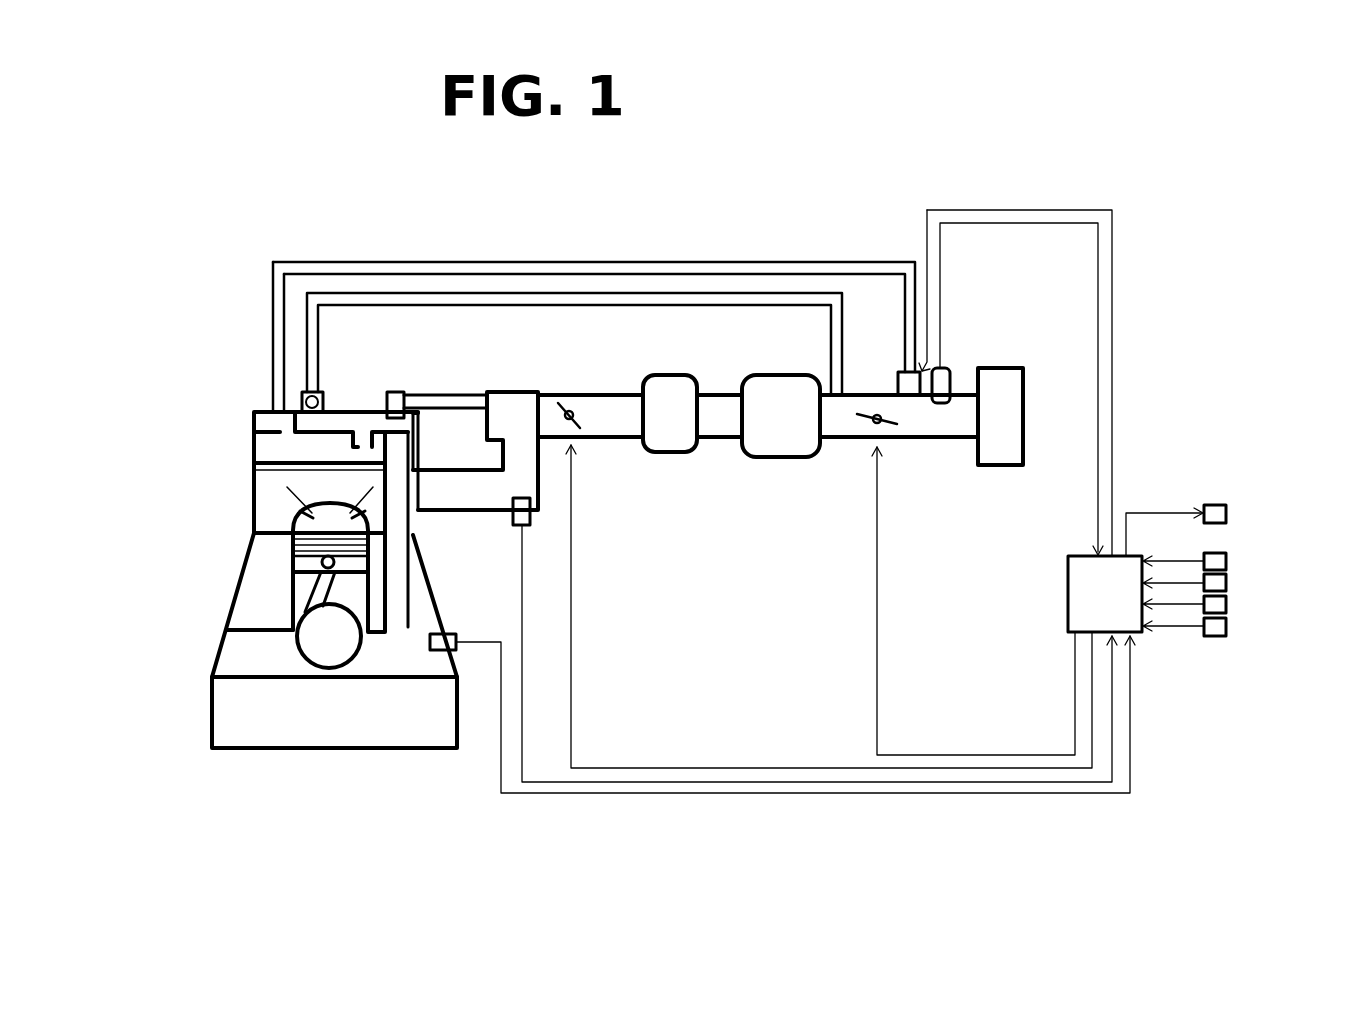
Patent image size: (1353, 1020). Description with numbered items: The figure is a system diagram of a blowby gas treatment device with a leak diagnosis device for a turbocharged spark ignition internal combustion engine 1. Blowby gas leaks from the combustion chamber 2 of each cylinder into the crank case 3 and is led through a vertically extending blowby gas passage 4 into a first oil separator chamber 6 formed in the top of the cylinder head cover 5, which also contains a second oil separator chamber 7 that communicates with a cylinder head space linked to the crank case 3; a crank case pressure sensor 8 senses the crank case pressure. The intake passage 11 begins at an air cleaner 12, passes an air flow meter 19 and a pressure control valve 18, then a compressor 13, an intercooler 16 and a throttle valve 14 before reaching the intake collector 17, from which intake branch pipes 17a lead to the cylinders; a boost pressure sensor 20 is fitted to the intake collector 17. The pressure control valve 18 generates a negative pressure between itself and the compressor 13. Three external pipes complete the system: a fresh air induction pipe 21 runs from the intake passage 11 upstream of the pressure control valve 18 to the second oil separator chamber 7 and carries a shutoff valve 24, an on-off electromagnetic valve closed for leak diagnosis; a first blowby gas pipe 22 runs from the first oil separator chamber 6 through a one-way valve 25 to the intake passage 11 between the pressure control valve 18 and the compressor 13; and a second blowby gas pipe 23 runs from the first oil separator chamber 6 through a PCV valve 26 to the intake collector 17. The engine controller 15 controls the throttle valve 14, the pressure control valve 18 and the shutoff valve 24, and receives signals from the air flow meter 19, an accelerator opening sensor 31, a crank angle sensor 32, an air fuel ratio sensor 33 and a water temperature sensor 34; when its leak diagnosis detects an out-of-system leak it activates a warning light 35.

The internal combustion engine 1 is at (203, 593).
The combustion chamber 2 is at (318, 523).
The crank case 3 is at (248, 648).
The blowby gas passage 4 is at (400, 575).
The cylinder head cover 5 is at (262, 445).
The first oil separator chamber 6 is at (347, 412).
The second oil separator chamber 7 is at (254, 418).
The crank case pressure sensor 8 is at (445, 633).
The intake passage 11 is at (940, 426).
The air cleaner 12 is at (1000, 456).
The compressor 13 is at (775, 437).
The throttle valve 14 is at (568, 407).
The engine controller 15 is at (1092, 598).
The intercooler 16 is at (672, 440).
The intake collector 17 is at (508, 404).
The intake branch pipes 17a is at (470, 498).
The pressure control valve 18 is at (870, 426).
The air flow meter 19 is at (947, 372).
The boost pressure sensor 20 is at (523, 527).
The fresh air induction pipe 21 is at (655, 263).
The first blowby gas pipe 22 is at (680, 294).
The second blowby gas pipe 23 is at (445, 396).
The shutoff valve 24 is at (903, 383).
The one-way valve 25 is at (322, 391).
The PCV valve 26 is at (398, 392).
The accelerator opening sensor 31 is at (1230, 560).
The crank angle sensor 32 is at (1230, 585).
The air fuel ratio sensor 33 is at (1230, 605).
The water temperature sensor 34 is at (1230, 627).
The warning light 35 is at (1230, 512).